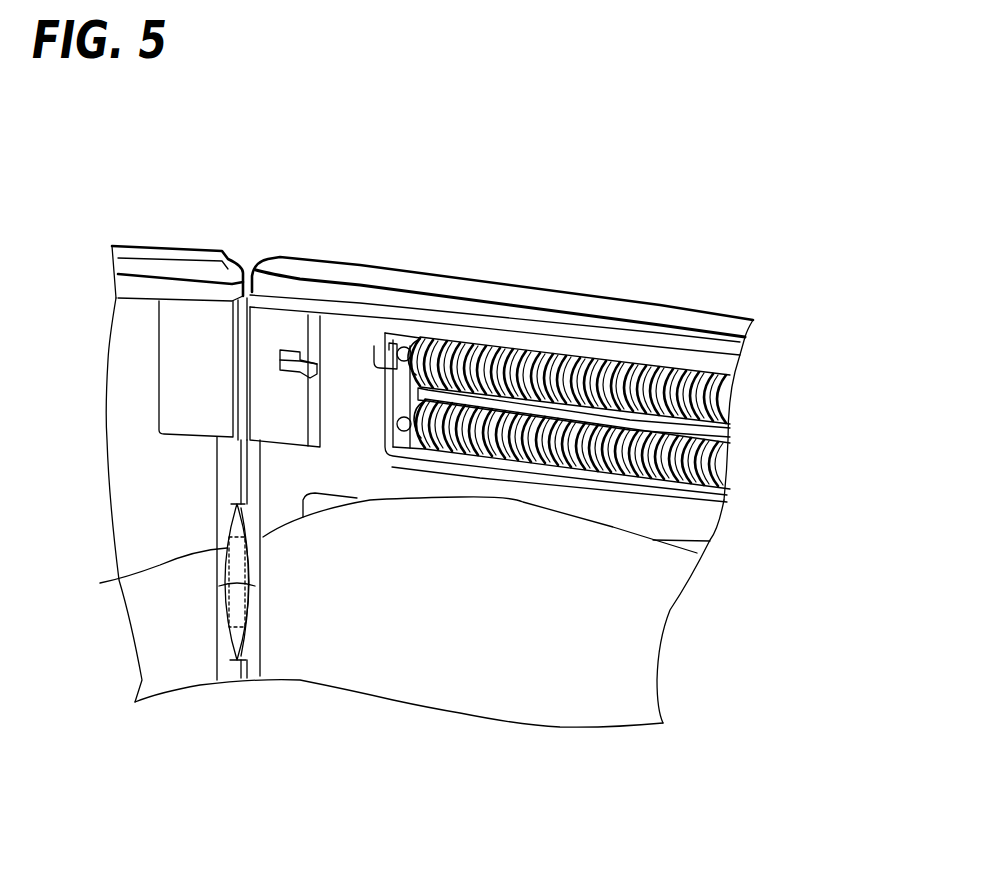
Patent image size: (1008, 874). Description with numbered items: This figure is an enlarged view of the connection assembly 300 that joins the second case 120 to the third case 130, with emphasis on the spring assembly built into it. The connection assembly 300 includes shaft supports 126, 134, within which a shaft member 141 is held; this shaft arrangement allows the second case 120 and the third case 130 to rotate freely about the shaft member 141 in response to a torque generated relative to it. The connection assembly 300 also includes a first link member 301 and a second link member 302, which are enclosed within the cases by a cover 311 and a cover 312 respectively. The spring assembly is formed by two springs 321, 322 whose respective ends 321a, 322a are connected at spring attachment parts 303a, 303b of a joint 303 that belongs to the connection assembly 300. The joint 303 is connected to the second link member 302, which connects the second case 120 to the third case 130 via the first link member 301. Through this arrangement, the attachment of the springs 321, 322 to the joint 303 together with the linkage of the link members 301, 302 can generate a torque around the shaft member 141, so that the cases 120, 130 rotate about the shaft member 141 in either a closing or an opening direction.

The connection assembly 300 is at (243, 172).
The first link member 301 is at (240, 367).
The second link member 302 is at (297, 356).
The joint 303 is at (393, 407).
The spring attachment part 303a is at (403, 346).
The spring attachment part 303b is at (403, 437).
The cover 311 is at (175, 350).
The cover 312 is at (292, 425).
The spring 321 is at (532, 358).
The end of spring 321a is at (420, 350).
The spring 322 is at (516, 425).
The end of spring 322a is at (419, 448).
The second case 120 is at (633, 618).
The shaft support 126 is at (100, 583).
The third case 130 is at (165, 623).
The shaft support 134 is at (221, 603).
The shaft member 141 is at (246, 573).